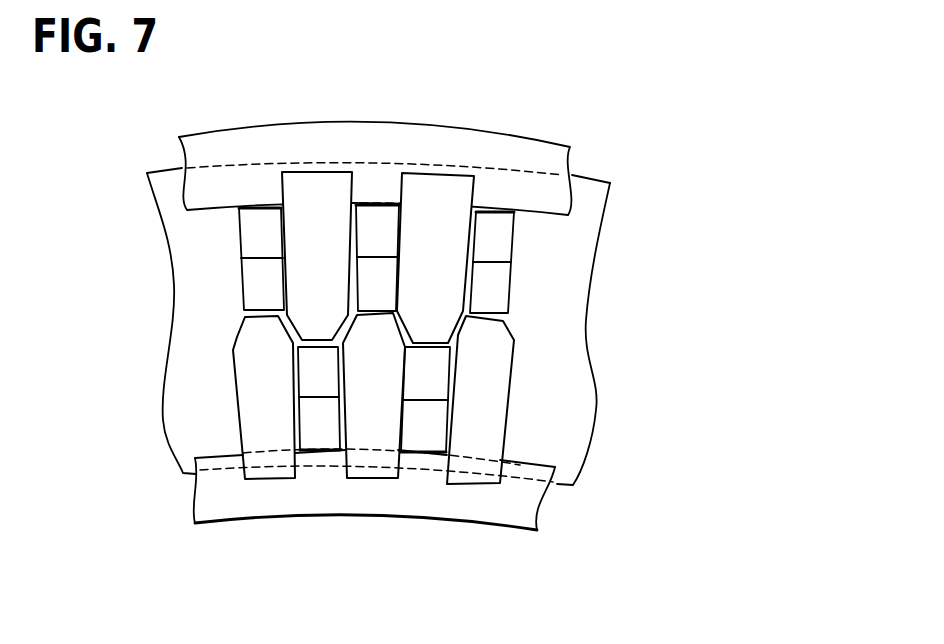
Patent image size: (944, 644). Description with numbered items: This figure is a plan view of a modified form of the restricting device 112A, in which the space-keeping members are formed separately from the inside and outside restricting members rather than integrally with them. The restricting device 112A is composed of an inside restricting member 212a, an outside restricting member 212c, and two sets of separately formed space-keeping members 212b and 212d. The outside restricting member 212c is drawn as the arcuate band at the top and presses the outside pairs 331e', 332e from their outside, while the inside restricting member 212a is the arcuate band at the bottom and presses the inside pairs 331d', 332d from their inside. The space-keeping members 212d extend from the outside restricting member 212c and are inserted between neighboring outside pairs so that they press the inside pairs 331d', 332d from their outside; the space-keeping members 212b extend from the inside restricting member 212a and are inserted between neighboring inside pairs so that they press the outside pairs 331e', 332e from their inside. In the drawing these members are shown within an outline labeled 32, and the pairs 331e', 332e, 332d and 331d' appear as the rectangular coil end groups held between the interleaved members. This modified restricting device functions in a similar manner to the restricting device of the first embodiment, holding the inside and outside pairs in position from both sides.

The restricting device 112A is at (598, 150).
The stator core 32 is at (587, 203).
The outside restricting member 212c is at (382, 143).
The space-keeping members 212d is at (318, 187).
The inside restricting member 212a is at (423, 503).
The space-keeping members 212b is at (267, 462).
The outside pair 331e' is at (588, 237).
The outside pair 332e is at (498, 288).
The inside pair 332d is at (432, 377).
The inside pair 331d' is at (556, 426).